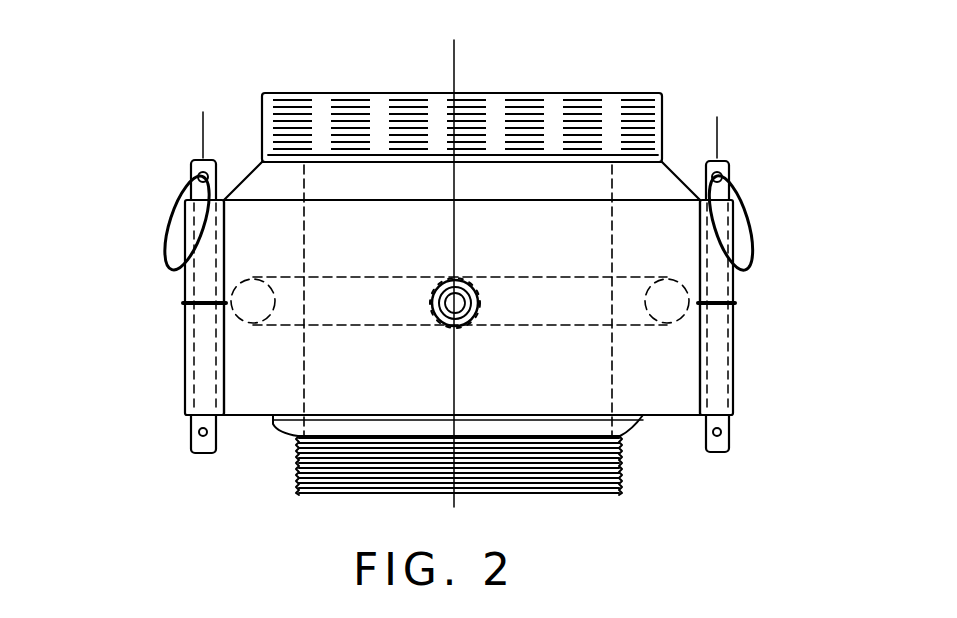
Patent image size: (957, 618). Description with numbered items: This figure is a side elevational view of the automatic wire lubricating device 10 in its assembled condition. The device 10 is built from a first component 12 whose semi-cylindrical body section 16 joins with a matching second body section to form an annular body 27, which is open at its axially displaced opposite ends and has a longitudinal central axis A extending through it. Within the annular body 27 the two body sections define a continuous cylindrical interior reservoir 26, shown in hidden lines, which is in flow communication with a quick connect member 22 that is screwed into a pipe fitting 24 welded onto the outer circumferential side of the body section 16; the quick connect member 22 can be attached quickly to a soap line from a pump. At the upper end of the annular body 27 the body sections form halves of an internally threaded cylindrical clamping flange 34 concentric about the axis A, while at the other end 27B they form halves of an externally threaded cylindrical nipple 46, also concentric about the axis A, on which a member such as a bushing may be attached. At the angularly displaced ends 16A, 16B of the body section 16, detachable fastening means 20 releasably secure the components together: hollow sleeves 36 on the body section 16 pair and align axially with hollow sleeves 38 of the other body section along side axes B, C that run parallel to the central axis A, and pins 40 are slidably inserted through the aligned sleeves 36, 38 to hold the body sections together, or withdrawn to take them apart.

The automatic wire lubricating device 10 is at (712, 75).
The first component 12 is at (251, 416).
The body section 16 is at (247, 367).
The angularly displaced end 16A is at (257, 183).
The angularly displaced end 16B is at (673, 207).
The detachable fastening means 20 is at (176, 156).
The quick connect member 22 is at (440, 323).
The pipe fitting 24 is at (480, 285).
The interior reservoir 26 is at (381, 273).
The annular body 27 is at (550, 75).
The axially displaced end 27B is at (597, 495).
The internally threaded cylindrical clamping flange 34 is at (632, 93).
The sleeves 36 is at (184, 332).
The sleeves 38 is at (184, 285).
The pins 40 is at (172, 185).
The externally threaded cylindrical nipple 46 is at (622, 468).
The longitudinal central axis A is at (458, 47).
The side axis B is at (203, 130).
The side axis C is at (719, 133).